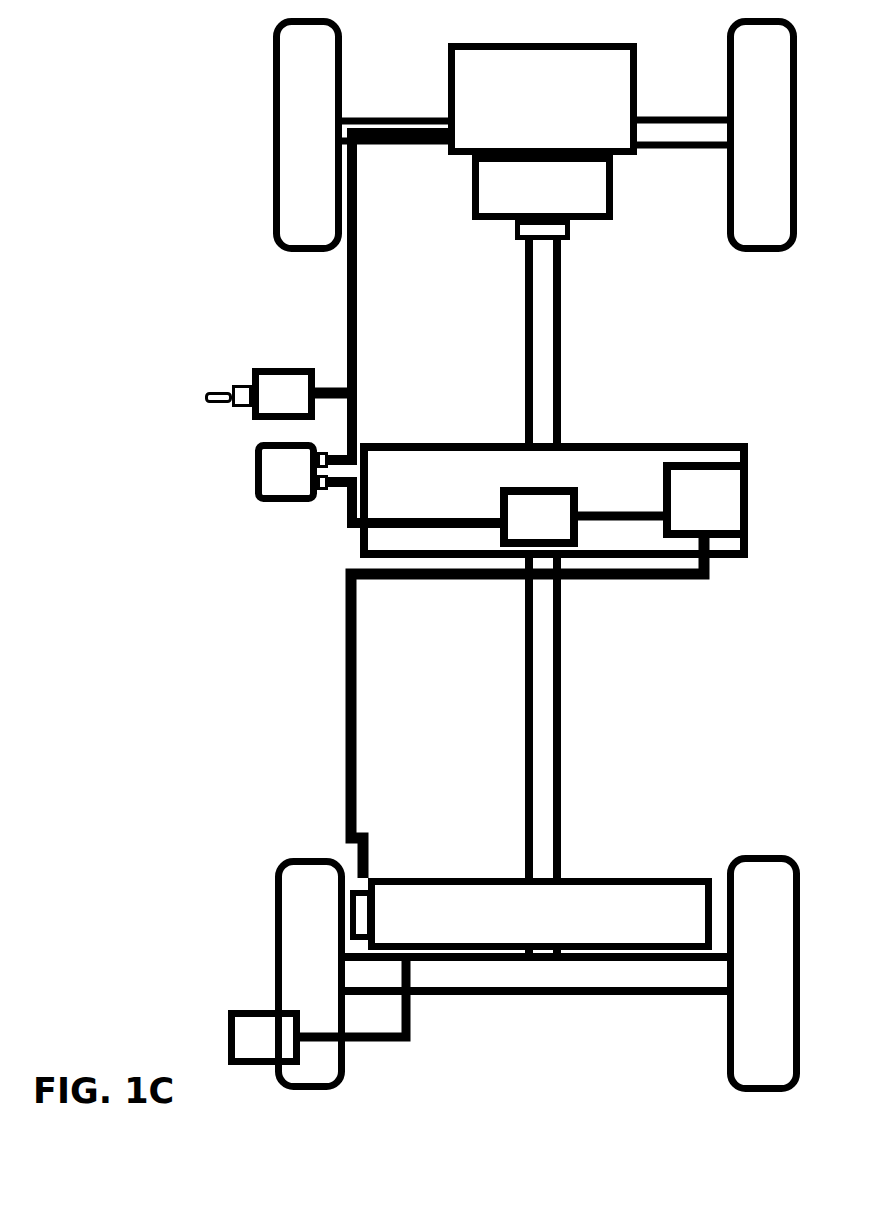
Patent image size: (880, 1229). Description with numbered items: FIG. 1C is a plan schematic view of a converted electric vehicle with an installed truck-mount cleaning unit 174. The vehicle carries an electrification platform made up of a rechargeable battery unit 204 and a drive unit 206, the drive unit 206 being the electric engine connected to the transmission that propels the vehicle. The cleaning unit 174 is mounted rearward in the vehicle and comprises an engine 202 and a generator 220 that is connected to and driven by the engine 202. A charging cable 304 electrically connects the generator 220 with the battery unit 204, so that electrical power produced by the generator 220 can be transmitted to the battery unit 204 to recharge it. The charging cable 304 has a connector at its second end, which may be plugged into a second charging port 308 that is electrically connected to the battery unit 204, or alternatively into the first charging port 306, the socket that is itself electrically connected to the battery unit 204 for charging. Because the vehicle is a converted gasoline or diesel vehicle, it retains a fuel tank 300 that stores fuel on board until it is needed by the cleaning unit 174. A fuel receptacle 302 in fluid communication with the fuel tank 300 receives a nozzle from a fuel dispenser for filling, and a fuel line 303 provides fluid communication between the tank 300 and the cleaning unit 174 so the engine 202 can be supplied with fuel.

The rechargeable battery unit 204 is at (510, 101).
The drive unit 206 is at (512, 200).
The truck-mount cleaning unit 174 is at (598, 493).
The generator 220 is at (513, 530).
The engine 202 is at (677, 518).
The fuel tank 300 is at (452, 931).
The fuel receptacle 302 is at (289, 1052).
The fuel line 303 is at (345, 710).
The charging cable 304 is at (342, 287).
The first charging port 306 is at (261, 409).
The second charging port 308 is at (263, 488).